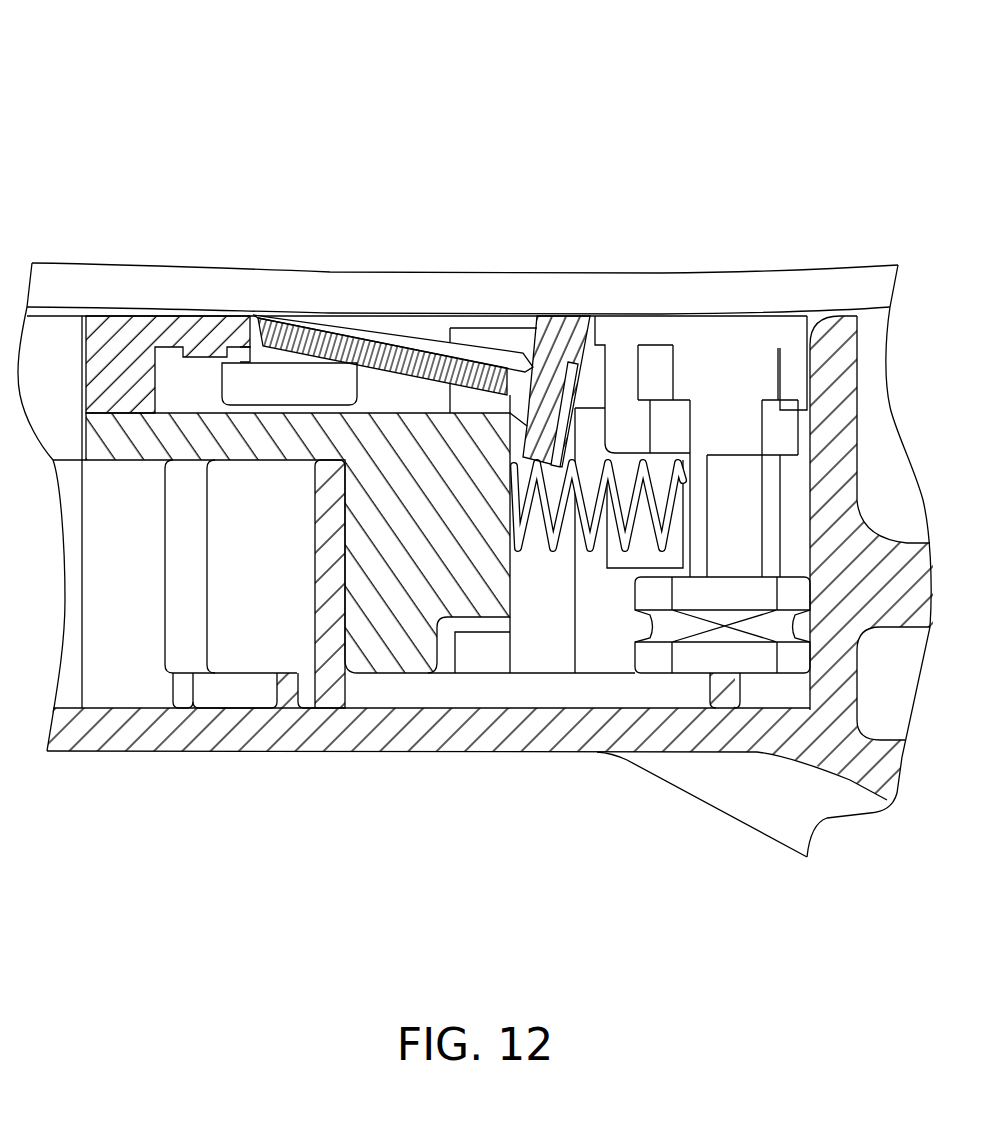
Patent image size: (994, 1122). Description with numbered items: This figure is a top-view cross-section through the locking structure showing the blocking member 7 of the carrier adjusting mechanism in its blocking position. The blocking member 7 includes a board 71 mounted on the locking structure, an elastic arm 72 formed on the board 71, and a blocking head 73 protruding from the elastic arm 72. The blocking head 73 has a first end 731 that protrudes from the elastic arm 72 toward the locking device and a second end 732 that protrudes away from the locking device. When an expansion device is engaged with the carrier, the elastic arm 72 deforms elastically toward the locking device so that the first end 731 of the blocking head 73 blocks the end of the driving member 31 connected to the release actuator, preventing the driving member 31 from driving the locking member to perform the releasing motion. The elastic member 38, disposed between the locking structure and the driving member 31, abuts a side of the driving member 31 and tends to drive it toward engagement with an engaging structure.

The blocking member 7 is at (410, 236).
The board 71 is at (186, 322).
The elastic arm 72 is at (377, 347).
The blocking head 73 is at (622, 276).
The first end 731 is at (550, 450).
The second end 732 is at (563, 322).
The driving member 31 is at (407, 667).
The elastic member 38 is at (555, 548).